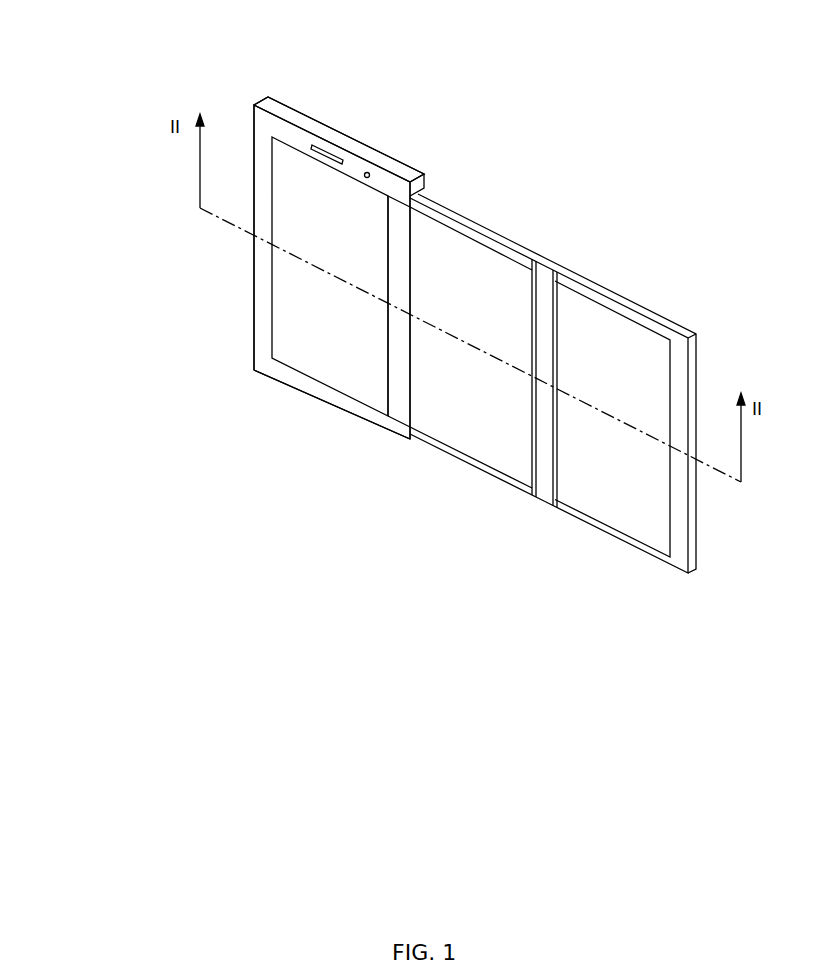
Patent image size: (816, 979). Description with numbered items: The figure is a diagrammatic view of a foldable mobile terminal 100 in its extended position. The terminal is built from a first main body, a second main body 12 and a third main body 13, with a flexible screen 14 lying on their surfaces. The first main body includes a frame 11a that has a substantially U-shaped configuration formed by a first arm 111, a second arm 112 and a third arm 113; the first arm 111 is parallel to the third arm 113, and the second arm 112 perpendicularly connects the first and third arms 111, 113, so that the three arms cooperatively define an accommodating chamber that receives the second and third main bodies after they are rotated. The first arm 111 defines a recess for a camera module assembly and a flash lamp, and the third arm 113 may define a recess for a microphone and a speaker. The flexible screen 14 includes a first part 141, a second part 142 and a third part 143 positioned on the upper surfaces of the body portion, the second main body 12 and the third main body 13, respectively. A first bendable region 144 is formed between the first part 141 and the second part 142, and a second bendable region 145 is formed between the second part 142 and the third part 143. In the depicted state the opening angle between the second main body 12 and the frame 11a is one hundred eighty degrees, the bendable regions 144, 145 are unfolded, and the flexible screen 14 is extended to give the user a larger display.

The foldable mobile terminal 100 is at (548, 93).
The frame 11a is at (143, 92).
The first arm 111 is at (295, 118).
The second arm 112 is at (264, 252).
The third arm 113 is at (275, 372).
The second main body 12 is at (508, 243).
The third main body 13 is at (597, 298).
The flexible screen 14 is at (540, 615).
The first part 141 is at (350, 372).
The second part 142 is at (482, 417).
The third part 143 is at (603, 482).
The first bendable region 144 is at (400, 410).
The second bendable region 145 is at (543, 467).